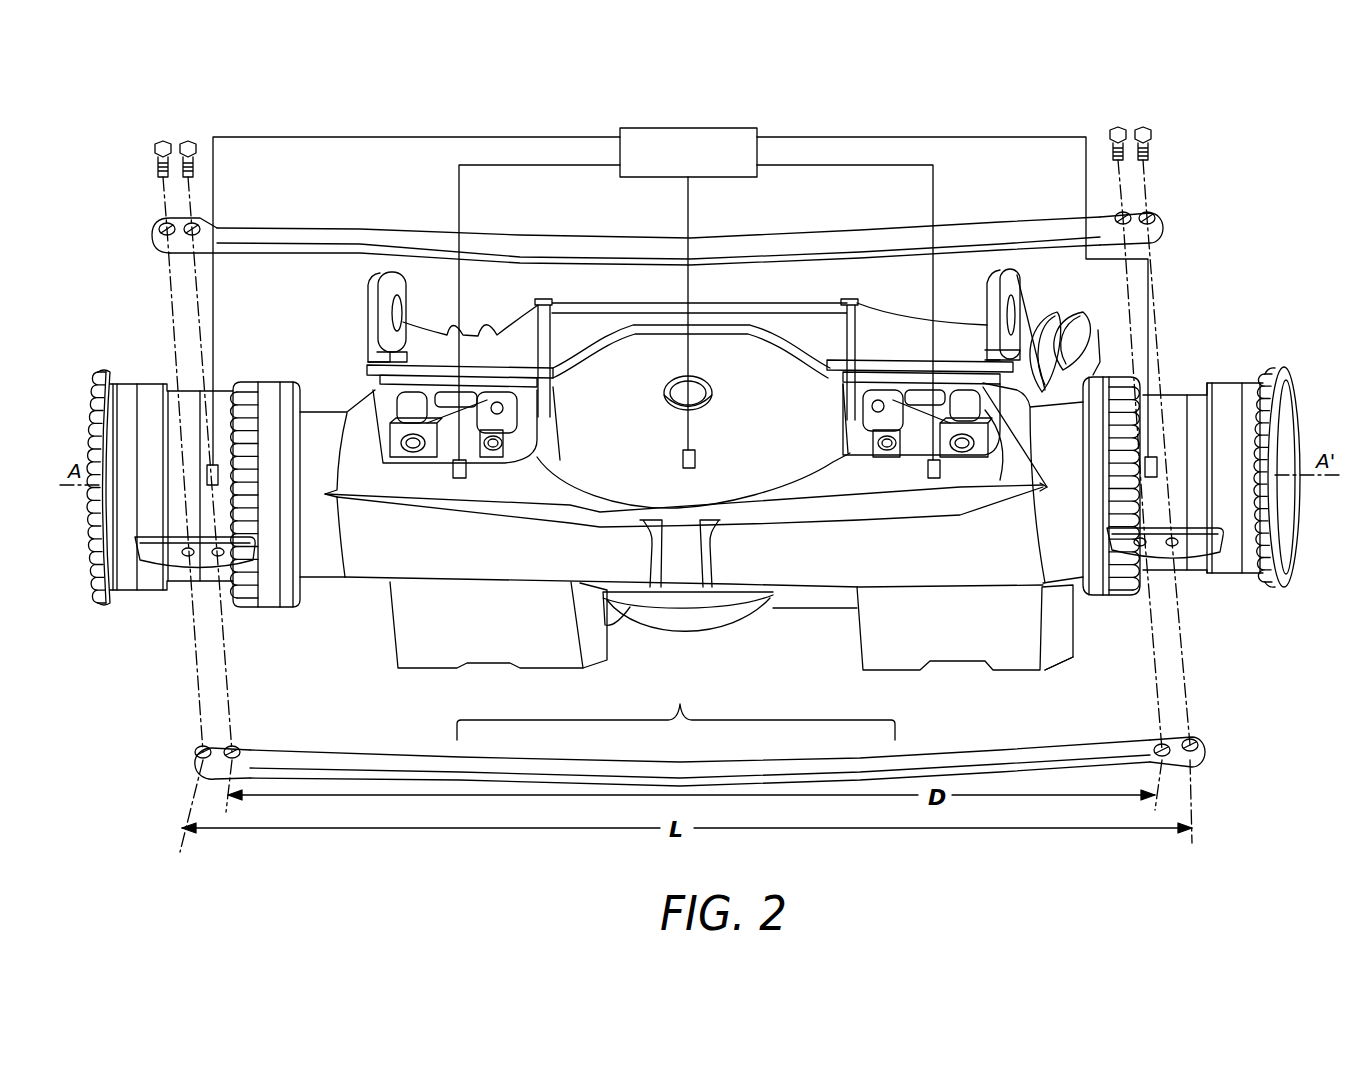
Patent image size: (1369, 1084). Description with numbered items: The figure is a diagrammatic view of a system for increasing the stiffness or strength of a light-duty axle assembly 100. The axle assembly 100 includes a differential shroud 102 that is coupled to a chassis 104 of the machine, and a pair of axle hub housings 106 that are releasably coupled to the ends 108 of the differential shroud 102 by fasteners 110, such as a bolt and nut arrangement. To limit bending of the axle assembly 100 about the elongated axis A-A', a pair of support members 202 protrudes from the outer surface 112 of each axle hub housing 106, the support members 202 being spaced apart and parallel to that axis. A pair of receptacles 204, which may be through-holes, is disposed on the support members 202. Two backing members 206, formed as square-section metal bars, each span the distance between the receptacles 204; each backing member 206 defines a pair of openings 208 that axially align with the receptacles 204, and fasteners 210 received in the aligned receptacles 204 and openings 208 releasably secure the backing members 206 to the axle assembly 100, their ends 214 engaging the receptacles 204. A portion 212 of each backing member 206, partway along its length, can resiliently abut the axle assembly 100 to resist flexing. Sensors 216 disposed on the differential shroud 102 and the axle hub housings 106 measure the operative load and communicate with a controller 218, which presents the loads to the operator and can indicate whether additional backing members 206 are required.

The axle assembly 100 is at (1228, 176).
The differential shroud 102 is at (617, 437).
The chassis 104 is at (1028, 335).
The axle hub housing 106 is at (145, 403).
The ends of the differential shroud 108 is at (1017, 423).
The fasteners 110 is at (1130, 587).
The outer surface 112 is at (770, 435).
The support member 202 is at (172, 565).
The receptacles 204 is at (190, 560).
The backing member 206 is at (412, 232).
The openings 208 is at (165, 225).
The fasteners 210 is at (188, 141).
The portion of the backing member 212 is at (676, 705).
The ends of the backing member 214 is at (152, 240).
The sensors 216 is at (222, 474).
The controller 218 is at (705, 169).